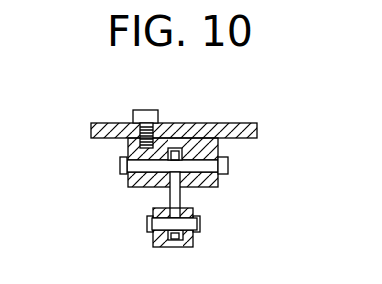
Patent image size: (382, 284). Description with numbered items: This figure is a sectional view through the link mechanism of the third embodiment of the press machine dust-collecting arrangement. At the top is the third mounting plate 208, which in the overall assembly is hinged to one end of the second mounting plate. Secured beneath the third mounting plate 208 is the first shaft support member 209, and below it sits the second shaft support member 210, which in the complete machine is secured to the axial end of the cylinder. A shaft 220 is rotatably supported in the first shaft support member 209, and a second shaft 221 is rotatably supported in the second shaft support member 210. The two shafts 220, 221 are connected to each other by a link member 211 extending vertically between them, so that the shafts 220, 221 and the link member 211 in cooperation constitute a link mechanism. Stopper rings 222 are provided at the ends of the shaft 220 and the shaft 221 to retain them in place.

The third mounting plate 208 is at (222, 123).
The first shaft support member 209 is at (218, 180).
The second shaft support member 210 is at (193, 243).
The link member 211 is at (170, 195).
The shaft 220 is at (228, 165).
The shaft 221 is at (200, 225).
The stopper ring 222 is at (120, 166).